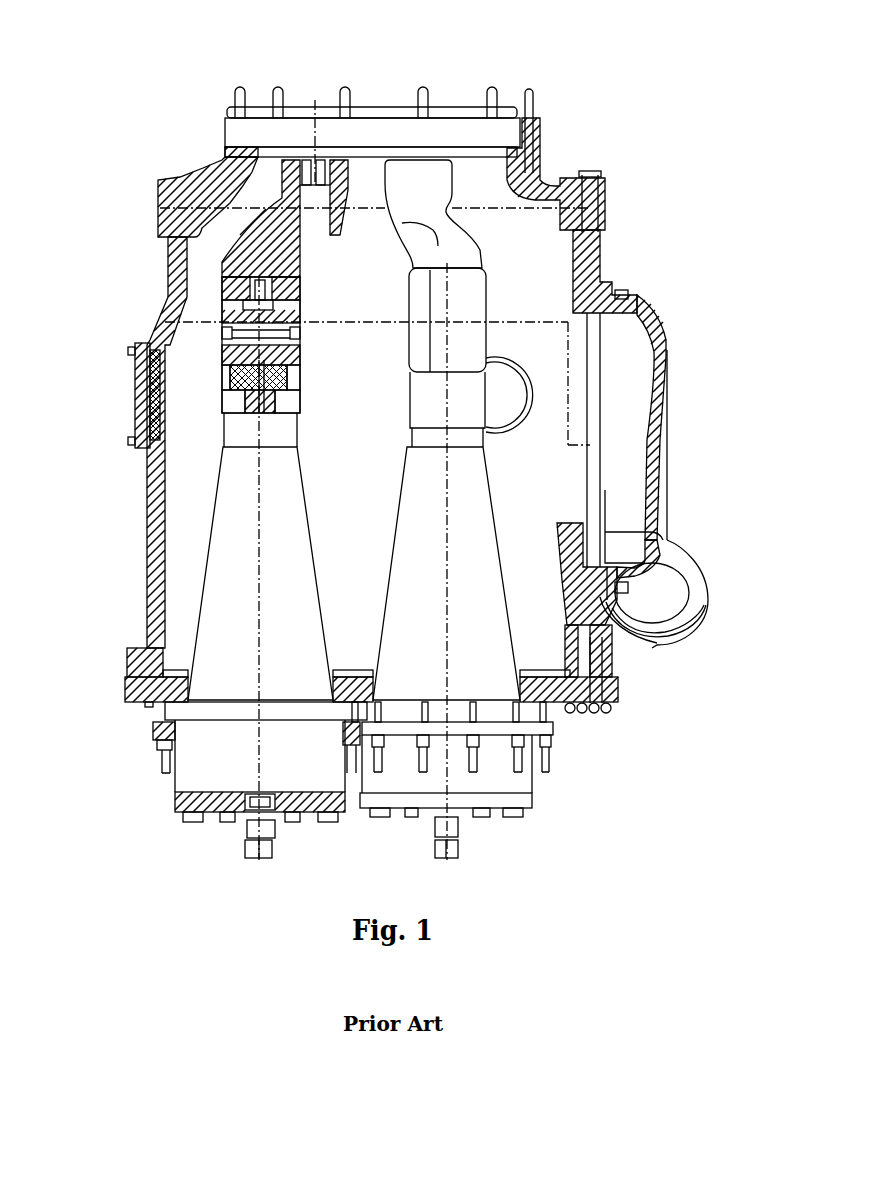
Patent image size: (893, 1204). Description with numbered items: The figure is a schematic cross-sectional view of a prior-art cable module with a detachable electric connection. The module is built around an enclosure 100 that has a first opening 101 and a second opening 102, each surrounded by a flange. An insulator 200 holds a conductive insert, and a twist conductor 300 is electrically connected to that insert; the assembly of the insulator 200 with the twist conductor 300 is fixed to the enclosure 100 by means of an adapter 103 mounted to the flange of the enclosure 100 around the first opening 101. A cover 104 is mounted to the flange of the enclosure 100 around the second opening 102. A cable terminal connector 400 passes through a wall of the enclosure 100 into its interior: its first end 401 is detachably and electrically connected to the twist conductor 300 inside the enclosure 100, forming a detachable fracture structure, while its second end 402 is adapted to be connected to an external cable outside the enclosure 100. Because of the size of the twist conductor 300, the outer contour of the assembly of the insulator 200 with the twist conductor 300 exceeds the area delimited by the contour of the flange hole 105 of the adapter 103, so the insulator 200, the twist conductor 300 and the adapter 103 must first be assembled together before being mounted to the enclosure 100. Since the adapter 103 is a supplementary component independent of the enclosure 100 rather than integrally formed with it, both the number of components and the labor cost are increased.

The enclosure 100 is at (173, 253).
The first opening 101 is at (489, 202).
The second opening 102 is at (607, 397).
The adapter 103 is at (203, 177).
The cover 104 is at (648, 317).
The flange hole 105 is at (270, 146).
The insulator 200 is at (387, 133).
The twist conductor 300 is at (263, 247).
The cable terminal connector 400 is at (240, 497).
The first end 401 is at (223, 330).
The second end 402 is at (205, 770).